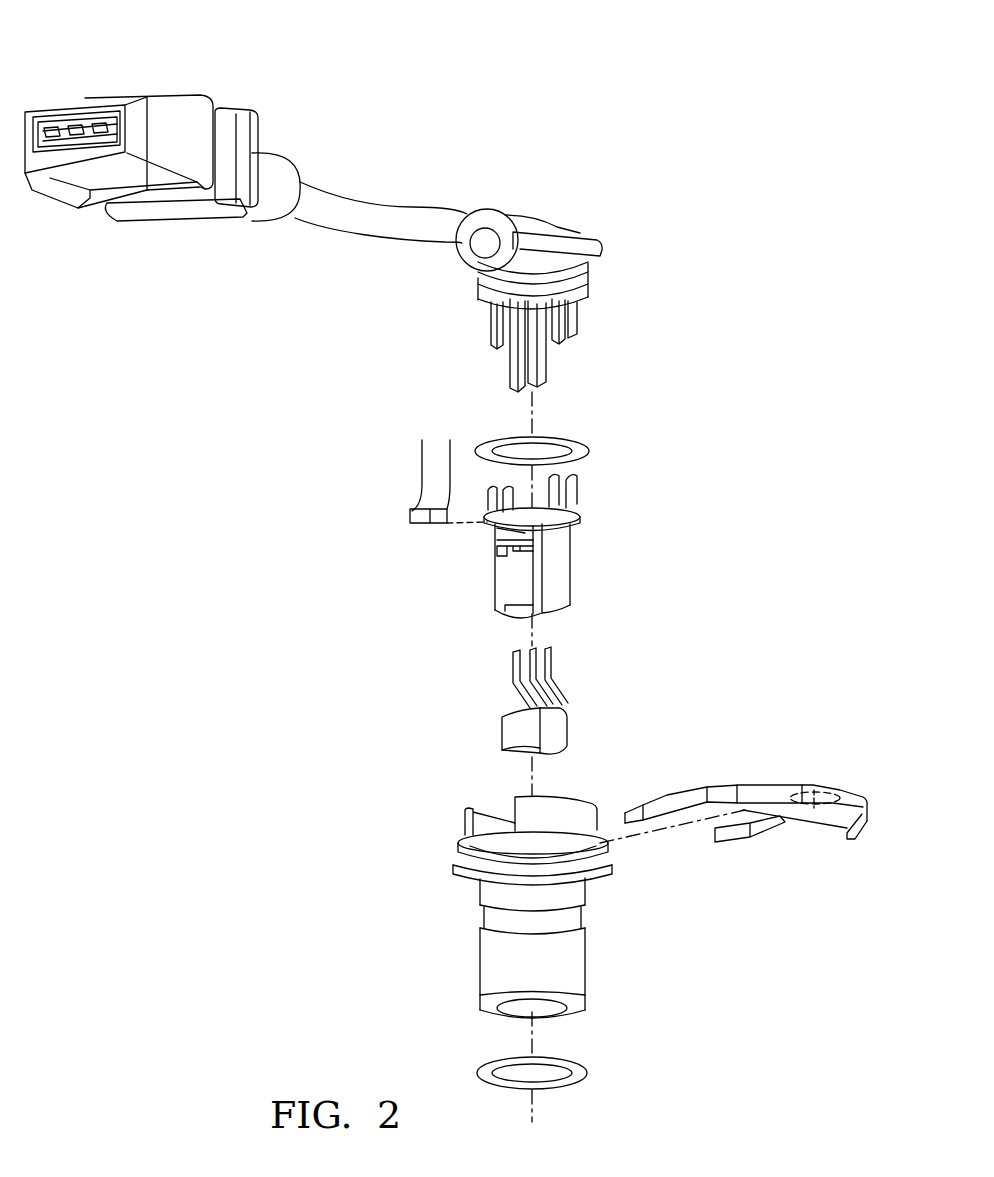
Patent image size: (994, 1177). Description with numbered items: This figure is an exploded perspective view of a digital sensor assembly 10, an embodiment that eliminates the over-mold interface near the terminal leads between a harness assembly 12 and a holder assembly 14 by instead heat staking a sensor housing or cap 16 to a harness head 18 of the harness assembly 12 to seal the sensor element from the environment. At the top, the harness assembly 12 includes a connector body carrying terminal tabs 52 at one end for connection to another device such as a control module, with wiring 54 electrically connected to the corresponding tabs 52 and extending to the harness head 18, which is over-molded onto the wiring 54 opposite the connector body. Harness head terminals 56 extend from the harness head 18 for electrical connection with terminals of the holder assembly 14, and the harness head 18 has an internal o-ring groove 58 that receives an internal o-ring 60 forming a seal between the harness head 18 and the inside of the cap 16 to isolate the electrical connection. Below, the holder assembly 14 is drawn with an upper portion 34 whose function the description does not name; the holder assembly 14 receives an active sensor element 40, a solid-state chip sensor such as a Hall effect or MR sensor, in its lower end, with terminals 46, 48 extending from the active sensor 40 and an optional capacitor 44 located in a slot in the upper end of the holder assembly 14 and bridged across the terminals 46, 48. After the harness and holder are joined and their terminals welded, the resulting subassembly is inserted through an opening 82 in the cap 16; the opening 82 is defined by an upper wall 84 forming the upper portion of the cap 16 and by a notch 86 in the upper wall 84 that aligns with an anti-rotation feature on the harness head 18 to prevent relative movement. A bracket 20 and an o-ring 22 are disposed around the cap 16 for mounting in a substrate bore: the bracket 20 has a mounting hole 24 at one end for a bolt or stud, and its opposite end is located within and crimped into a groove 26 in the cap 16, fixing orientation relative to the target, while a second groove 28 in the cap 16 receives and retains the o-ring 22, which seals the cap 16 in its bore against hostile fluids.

The sensor assembly 10 is at (427, 969).
The harness assembly 12 is at (403, 119).
The holder assembly 14 is at (496, 577).
The cap 16 is at (578, 978).
The harness head 18 is at (577, 232).
The bracket 20 is at (866, 790).
The o-ring 22 is at (585, 1074).
The mounting hole 24 is at (813, 790).
The groove 26 is at (580, 848).
The second groove 28 is at (570, 920).
The bobbin top flange 34 is at (526, 507).
The active sensor element 40 is at (512, 730).
The capacitor 44 is at (410, 515).
The terminal 46 is at (513, 660).
The terminal 48 is at (530, 655).
The terminal tabs 52 is at (92, 108).
The wiring 54 is at (418, 210).
The harness head terminals 56 is at (540, 357).
The internal o-ring groove 58 is at (482, 272).
The internal o-ring 60 is at (567, 445).
The opening 82 is at (596, 801).
The upper wall 84 is at (640, 792).
The notch 86 is at (492, 815).